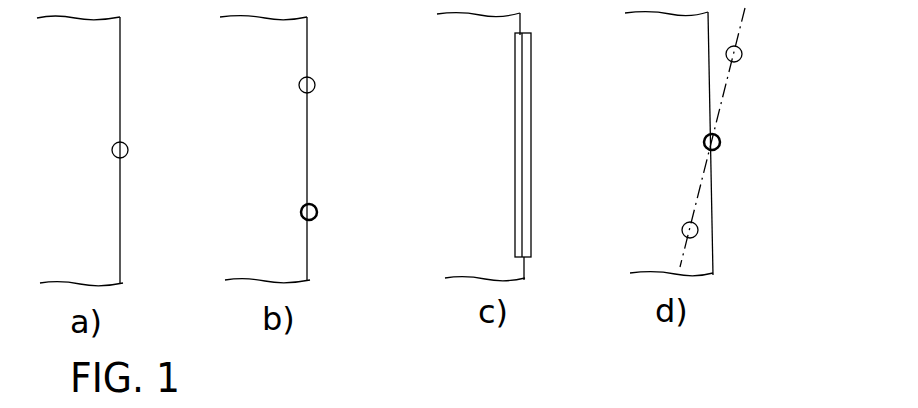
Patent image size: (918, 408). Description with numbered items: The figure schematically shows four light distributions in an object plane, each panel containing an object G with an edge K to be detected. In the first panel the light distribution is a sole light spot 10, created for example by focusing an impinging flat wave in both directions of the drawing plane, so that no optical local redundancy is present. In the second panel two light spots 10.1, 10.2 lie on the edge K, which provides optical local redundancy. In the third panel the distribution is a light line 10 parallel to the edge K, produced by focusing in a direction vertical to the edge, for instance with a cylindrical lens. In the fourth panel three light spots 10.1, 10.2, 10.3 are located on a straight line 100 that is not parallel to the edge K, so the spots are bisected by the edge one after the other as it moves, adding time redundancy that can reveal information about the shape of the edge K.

The light spot 10 is at (128, 150).
The light spot 10.1 is at (316, 87).
The light spot 10.2 is at (318, 209).
The light spot 10.3 is at (699, 230).
The straight line 100 is at (727, 86).
The edge K is at (120, 212).
The object G is at (66, 71).